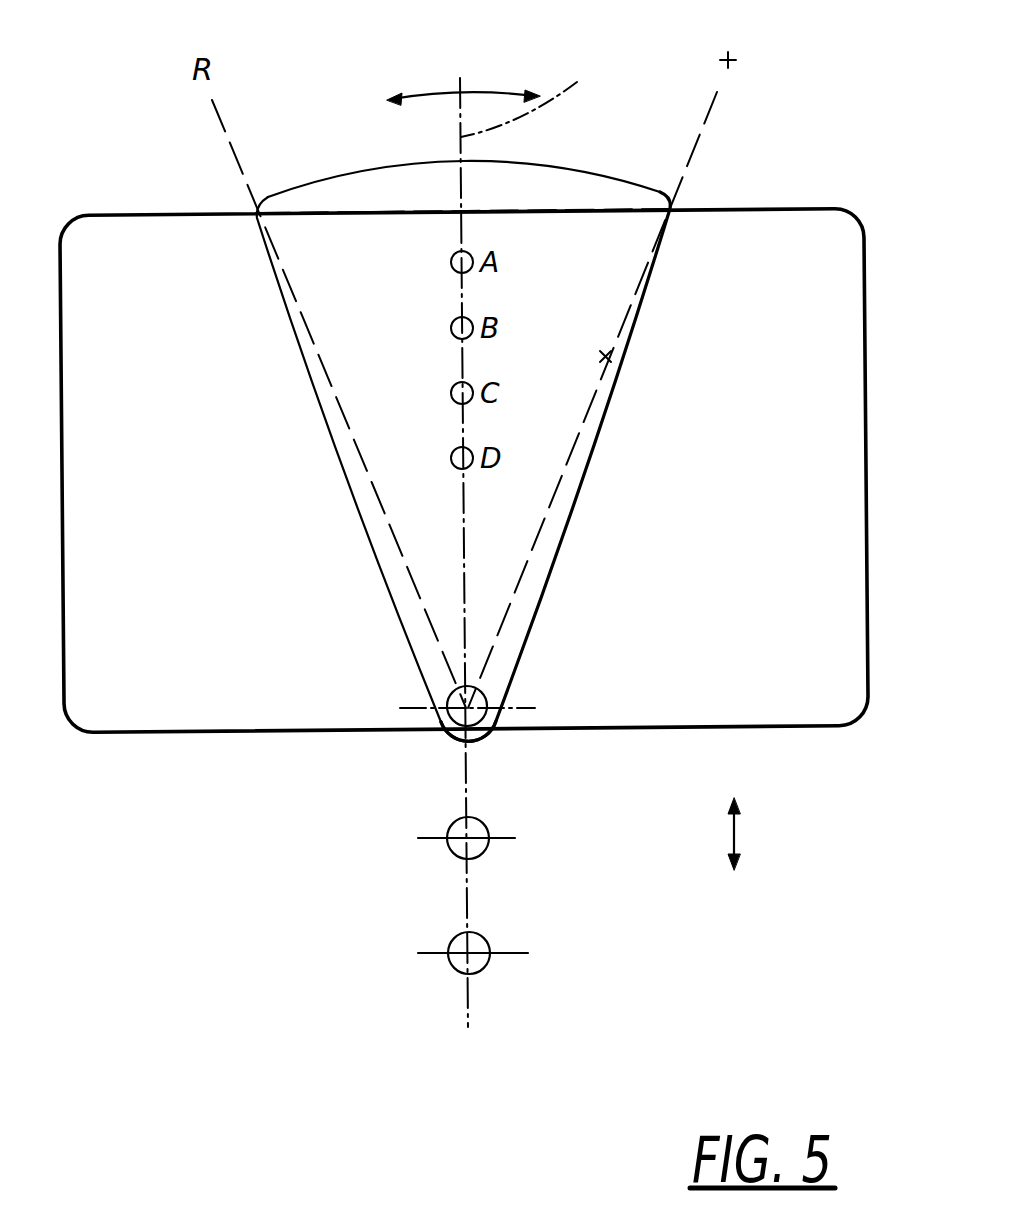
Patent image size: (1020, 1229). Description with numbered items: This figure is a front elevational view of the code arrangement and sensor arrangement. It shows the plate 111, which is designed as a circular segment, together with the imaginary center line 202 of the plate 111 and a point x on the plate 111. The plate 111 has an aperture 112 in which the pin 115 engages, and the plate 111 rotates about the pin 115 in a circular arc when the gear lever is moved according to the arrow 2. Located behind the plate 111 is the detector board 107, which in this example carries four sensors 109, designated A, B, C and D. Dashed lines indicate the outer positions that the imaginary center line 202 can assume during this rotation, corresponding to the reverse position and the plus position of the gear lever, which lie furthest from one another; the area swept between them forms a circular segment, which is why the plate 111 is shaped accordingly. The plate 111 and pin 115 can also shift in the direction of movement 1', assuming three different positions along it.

The detector board 107 is at (870, 448).
The plate 111 is at (336, 172).
The sensors 109 is at (468, 255).
The pin 115 is at (484, 694).
The aperture 112 is at (447, 731).
The arrow 2 is at (487, 92).
The imaginary center line 202 is at (536, 92).
The direction of movement 1' is at (779, 834).